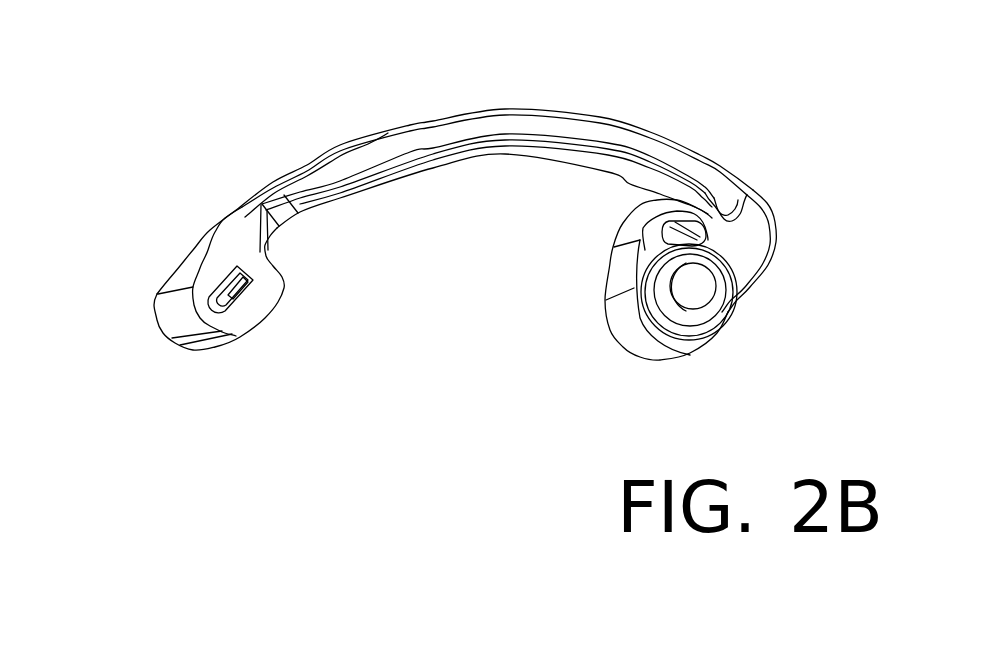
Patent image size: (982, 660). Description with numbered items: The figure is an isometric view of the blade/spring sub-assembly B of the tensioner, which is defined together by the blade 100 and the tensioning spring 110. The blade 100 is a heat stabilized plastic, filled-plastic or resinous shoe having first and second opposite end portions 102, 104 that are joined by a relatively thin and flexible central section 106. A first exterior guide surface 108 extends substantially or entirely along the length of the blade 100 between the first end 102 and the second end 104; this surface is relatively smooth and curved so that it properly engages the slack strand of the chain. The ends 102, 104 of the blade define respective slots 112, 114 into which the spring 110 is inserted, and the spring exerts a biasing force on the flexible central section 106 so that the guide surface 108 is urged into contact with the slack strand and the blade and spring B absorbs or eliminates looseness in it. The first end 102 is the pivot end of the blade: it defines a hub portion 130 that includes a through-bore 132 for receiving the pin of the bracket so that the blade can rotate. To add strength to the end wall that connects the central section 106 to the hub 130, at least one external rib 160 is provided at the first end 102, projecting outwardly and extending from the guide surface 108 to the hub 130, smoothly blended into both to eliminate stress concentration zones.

The blade 100 is at (673, 157).
The first end portion 102 is at (743, 222).
The second end portion 104 is at (177, 310).
The central section 106 is at (433, 136).
The first exterior guide surface 108 is at (240, 217).
The tensioning spring 110 is at (608, 171).
The first slot 112 is at (745, 197).
The second slot 114 is at (260, 303).
The hub portion 130 is at (637, 330).
The through-bore 132 is at (710, 290).
The external rib 160 is at (758, 247).
The blade/spring sub-assembly B is at (542, 60).